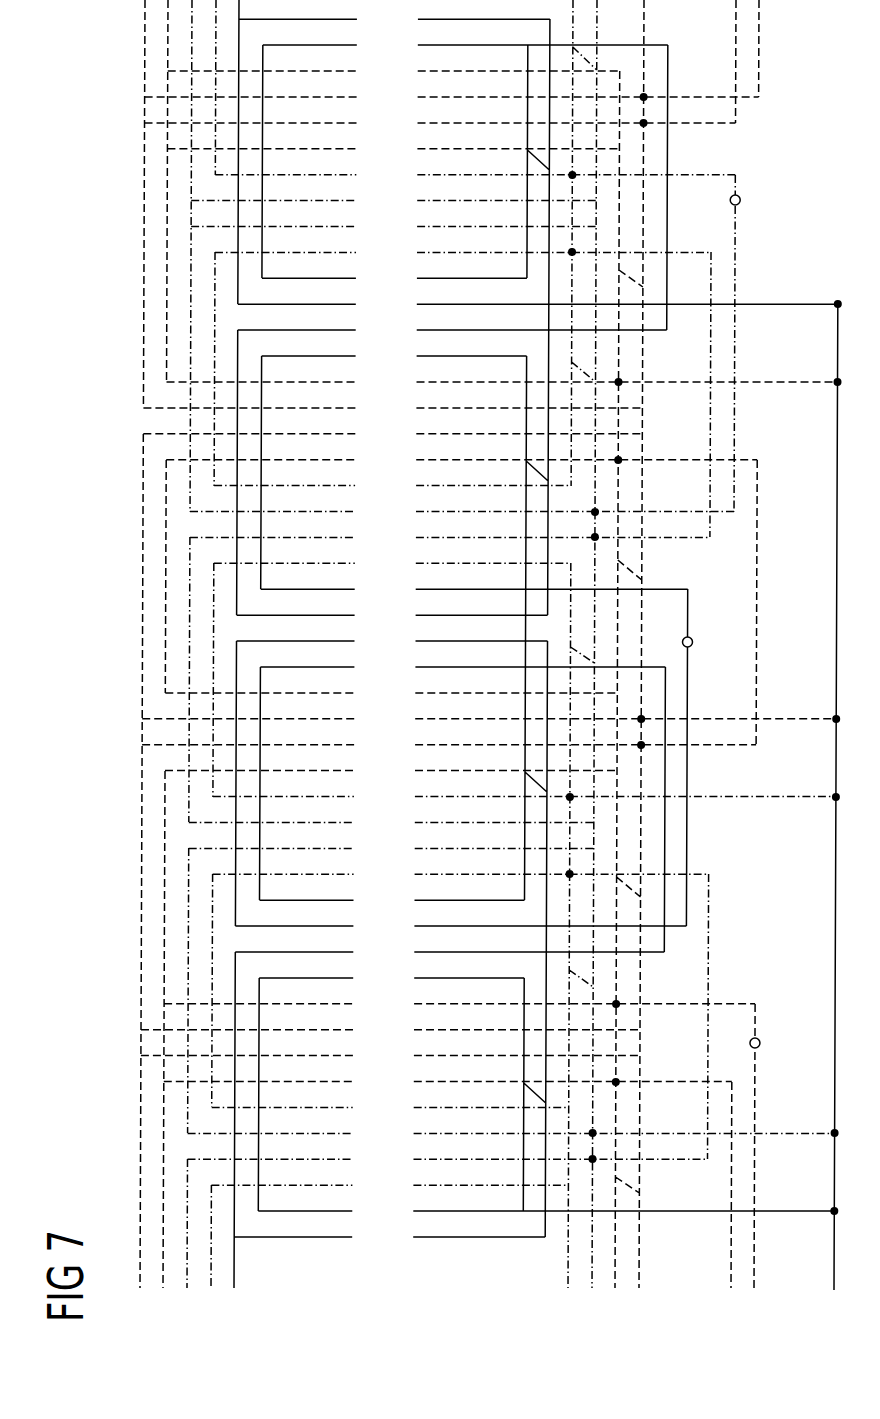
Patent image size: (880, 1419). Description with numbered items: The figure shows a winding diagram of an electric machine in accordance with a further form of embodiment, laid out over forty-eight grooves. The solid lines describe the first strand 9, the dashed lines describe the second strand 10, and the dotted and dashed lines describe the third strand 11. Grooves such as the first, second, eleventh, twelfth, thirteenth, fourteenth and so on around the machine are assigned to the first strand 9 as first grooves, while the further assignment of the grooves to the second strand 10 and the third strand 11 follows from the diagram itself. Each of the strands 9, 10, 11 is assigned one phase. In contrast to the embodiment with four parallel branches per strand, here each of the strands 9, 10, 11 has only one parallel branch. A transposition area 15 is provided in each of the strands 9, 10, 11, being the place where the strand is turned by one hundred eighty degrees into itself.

The first strand 9 is at (700, 1262).
The second strand 10 is at (800, 1000).
The third strand 11 is at (760, 923).
The transposition area 15 is at (737, 198).